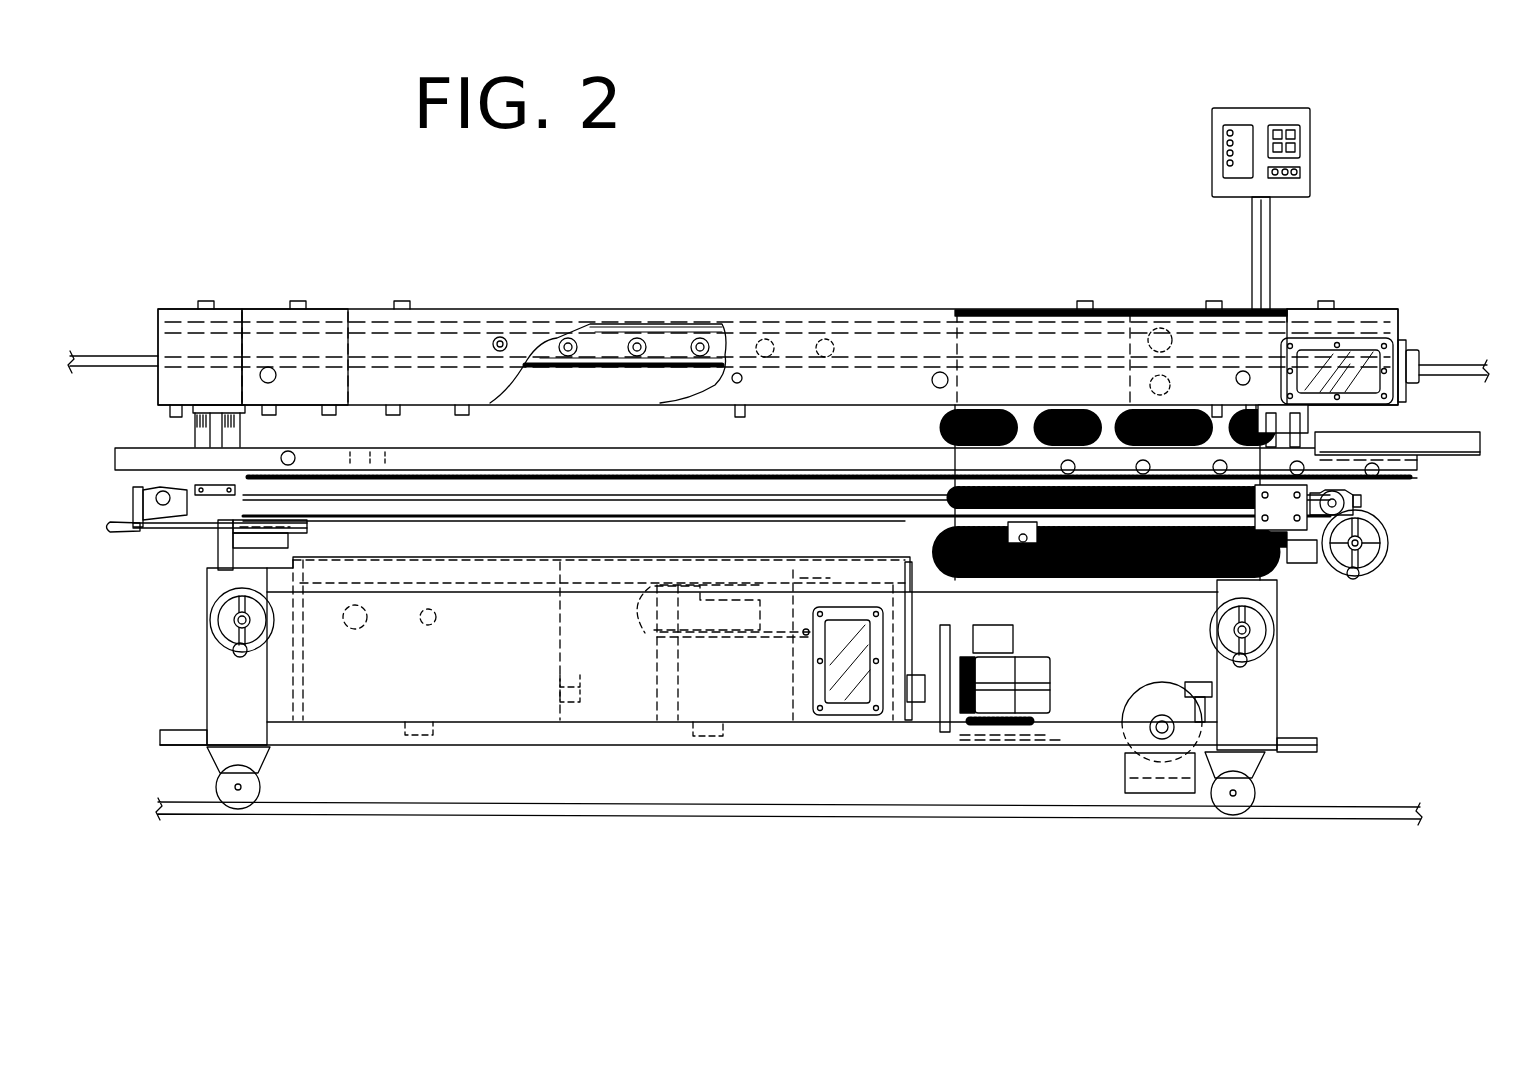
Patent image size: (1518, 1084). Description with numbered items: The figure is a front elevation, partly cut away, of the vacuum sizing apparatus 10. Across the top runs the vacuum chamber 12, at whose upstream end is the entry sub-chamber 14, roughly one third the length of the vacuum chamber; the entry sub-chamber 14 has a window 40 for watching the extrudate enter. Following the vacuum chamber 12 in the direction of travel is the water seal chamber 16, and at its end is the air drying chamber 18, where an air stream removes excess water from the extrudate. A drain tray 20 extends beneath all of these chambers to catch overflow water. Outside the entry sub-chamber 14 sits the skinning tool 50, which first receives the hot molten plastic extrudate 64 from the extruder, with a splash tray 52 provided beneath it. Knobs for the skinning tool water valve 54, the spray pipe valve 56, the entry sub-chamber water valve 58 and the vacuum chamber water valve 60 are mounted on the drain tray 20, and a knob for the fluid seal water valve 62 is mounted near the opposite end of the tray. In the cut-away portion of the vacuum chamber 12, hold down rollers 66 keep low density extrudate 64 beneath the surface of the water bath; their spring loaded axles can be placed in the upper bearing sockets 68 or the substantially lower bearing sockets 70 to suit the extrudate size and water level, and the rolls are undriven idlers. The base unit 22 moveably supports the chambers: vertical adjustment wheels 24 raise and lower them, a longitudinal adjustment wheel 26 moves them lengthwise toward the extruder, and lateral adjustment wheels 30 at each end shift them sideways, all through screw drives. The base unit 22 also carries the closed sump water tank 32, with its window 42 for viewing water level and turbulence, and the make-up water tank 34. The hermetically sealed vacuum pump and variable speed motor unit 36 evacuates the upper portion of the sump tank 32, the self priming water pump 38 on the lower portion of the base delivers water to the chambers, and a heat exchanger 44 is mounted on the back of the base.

The vacuum sizing apparatus 10 is at (752, 260).
The vacuum chamber 12 is at (787, 347).
The entry sub-chamber 14 is at (1291, 318).
The water seal chamber 16 is at (325, 306).
The air drying chamber 18 is at (218, 330).
The drain tray 20 is at (612, 465).
The base unit 22 is at (1278, 660).
The vertical adjustment wheels 24 is at (225, 600).
The longitudinal adjustment wheel 26 is at (1382, 553).
The lateral adjustment wheels 30 is at (130, 500).
The closed sump water tank 32 is at (745, 700).
The make-up water tank 34 is at (438, 664).
The hermetically sealed vacuum pump and variable speed motor unit 36 is at (1027, 675).
The self priming water pump 38 is at (1160, 695).
The window 40 is at (1338, 350).
The window 42 is at (848, 692).
The heat exchanger 44 is at (718, 580).
The skinning tool 50 is at (1413, 348).
The splash tray 52 is at (1450, 432).
The skinning tool water valve 54 is at (1304, 468).
The spray pipe valve 56 is at (1222, 461).
The entry sub-chamber water valve 58 is at (1142, 461).
The vacuum chamber water valve 60 is at (1067, 461).
The fluid seal water valve 62 is at (297, 455).
The plastic extrudate 64 is at (1450, 365).
The hold down rollers 66 is at (700, 338).
The upper bearing sockets 68 is at (566, 338).
The lower bearing sockets 70 is at (600, 378).